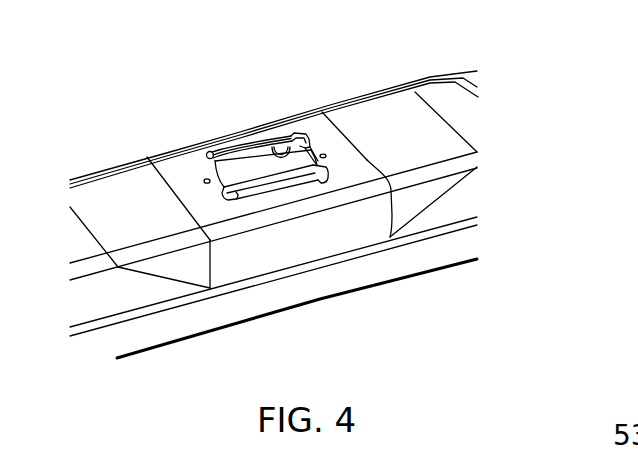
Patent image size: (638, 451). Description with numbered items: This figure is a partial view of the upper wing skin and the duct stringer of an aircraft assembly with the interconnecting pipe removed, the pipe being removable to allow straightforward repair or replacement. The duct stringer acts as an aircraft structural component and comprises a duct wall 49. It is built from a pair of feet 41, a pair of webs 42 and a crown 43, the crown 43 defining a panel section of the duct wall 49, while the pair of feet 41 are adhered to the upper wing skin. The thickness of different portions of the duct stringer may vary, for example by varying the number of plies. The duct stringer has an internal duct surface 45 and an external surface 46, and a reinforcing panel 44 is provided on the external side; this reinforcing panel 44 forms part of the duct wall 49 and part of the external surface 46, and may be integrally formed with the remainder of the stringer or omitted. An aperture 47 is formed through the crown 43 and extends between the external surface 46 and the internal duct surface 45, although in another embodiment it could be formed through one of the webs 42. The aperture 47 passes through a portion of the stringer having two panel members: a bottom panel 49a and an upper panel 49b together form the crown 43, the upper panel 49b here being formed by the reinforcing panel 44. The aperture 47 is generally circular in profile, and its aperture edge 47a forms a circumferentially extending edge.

The feet 41 is at (141, 345).
The webs 42 is at (104, 305).
The crown 43 is at (478, 122).
The reinforcing panel 44 is at (318, 110).
The internal duct surface 45 is at (270, 145).
The external surface 46 is at (367, 158).
The aperture 47 is at (280, 188).
The aperture edge 47a is at (305, 185).
The duct wall 49 is at (113, 187).
The bottom panel 49a is at (257, 144).
The upper panel 49b is at (287, 130).